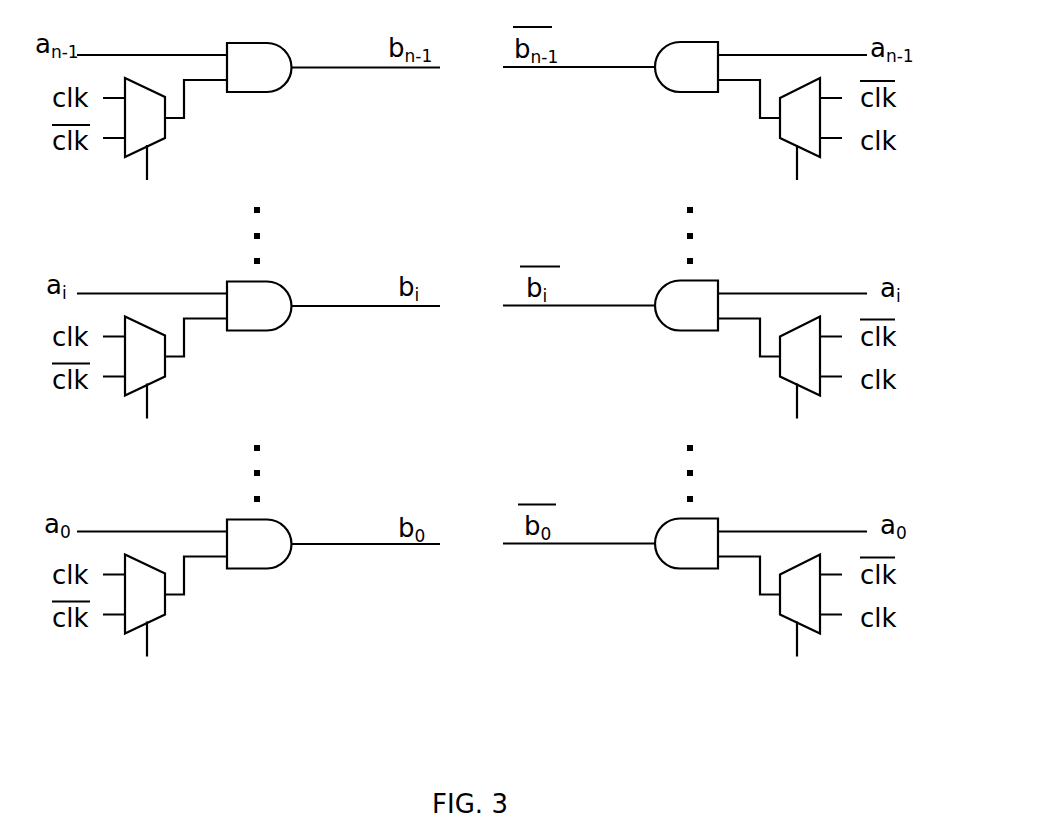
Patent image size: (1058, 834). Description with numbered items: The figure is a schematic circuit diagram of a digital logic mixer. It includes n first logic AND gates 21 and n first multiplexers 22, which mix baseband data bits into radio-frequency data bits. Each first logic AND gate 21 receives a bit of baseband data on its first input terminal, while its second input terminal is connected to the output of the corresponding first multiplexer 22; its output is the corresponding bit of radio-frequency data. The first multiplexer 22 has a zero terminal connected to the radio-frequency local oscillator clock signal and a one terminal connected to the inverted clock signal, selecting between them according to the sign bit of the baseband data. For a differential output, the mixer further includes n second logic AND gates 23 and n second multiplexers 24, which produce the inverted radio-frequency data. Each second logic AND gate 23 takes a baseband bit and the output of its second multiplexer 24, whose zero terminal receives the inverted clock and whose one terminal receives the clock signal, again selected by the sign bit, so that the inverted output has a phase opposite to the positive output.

The first logic AND gate 21 is at (259, 310).
The first multiplexer 22 is at (153, 384).
The second logic AND gate 23 is at (686, 313).
The second multiplexer 24 is at (793, 384).